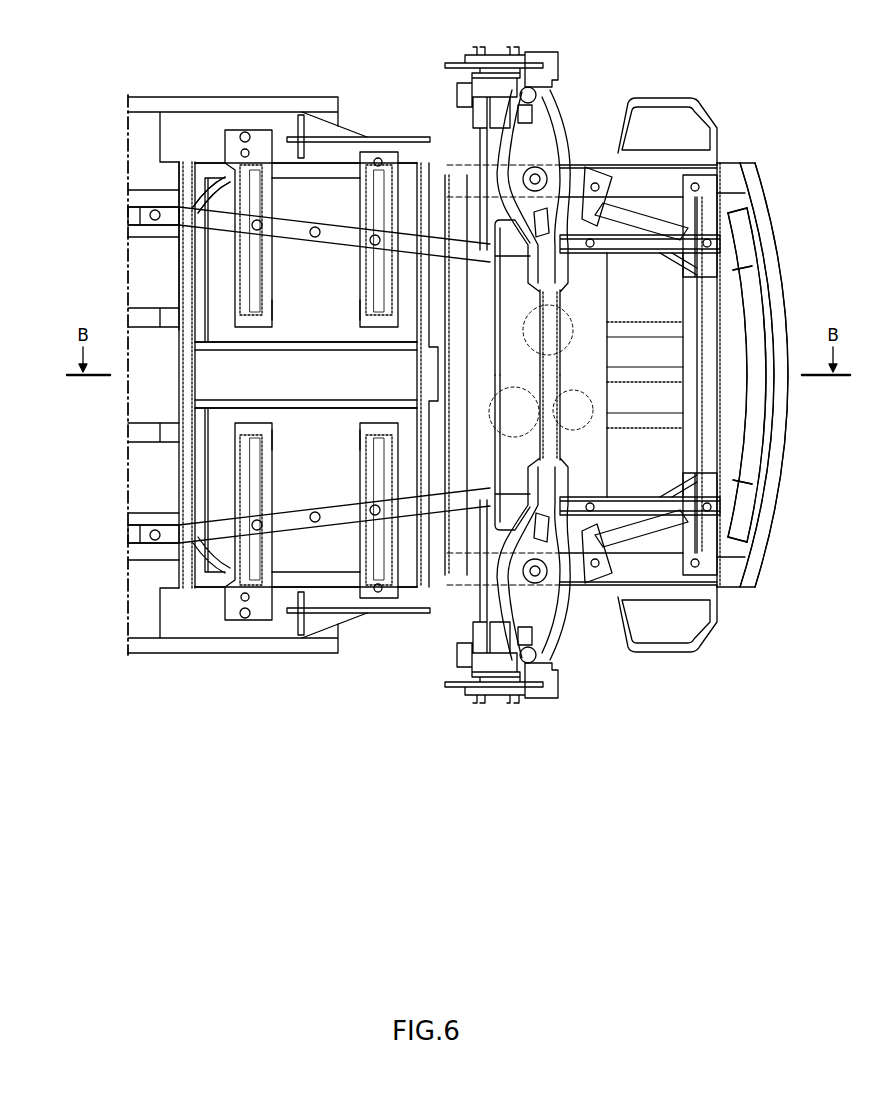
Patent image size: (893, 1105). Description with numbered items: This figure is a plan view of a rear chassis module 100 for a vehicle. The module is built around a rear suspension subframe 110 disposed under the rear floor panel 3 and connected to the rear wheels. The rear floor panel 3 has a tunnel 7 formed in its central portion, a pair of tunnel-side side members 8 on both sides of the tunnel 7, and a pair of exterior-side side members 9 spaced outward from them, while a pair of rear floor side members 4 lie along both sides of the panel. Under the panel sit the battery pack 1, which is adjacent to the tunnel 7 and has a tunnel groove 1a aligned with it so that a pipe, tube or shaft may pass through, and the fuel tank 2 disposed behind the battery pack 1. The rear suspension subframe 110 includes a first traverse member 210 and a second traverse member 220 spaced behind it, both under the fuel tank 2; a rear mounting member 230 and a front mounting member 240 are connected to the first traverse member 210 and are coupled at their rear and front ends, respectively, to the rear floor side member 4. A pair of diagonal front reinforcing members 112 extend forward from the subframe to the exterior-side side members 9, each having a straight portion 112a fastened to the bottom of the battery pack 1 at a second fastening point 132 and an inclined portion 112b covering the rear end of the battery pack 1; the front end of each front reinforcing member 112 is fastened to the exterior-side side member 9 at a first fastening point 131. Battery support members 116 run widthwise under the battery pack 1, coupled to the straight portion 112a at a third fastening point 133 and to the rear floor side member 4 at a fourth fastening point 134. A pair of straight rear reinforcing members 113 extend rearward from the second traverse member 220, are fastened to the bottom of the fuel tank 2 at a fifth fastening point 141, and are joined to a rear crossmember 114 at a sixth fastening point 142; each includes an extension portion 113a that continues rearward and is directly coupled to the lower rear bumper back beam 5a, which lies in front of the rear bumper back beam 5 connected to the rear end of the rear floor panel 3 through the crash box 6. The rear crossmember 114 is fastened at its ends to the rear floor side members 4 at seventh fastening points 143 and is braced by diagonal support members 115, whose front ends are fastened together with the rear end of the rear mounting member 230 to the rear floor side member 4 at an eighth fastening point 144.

The battery pack 1 is at (343, 553).
The tunnel groove 1a is at (286, 383).
The fuel tank 2 is at (593, 397).
The rear floor panel 3 is at (157, 578).
The rear floor side member 4 is at (325, 128).
The rear bumper back beam 5 is at (775, 450).
The lower rear bumper back beam 5a is at (757, 418).
The crash box 6 is at (728, 162).
The tunnel 7 is at (140, 392).
The tunnel-side side member 8 is at (128, 300).
The exterior-side side member 9 is at (128, 215).
The rear chassis module 100 is at (357, 706).
The rear suspension subframe 110 is at (430, 368).
The front reinforcing member 112 is at (185, 217).
The straight portion 112a is at (220, 220).
The inclined portion 112b is at (458, 250).
The rear reinforcing member 113 is at (635, 245).
The extension portion 113a is at (730, 256).
The rear crossmember 114 is at (707, 295).
The support member 115 is at (657, 223).
The battery support member 116 is at (366, 307).
The first fastening point 131 is at (153, 214).
The second fastening point 132 is at (315, 227).
The third fastening point 133 is at (378, 235).
The fourth fastening point 134 is at (245, 132).
The fifth fastening point 141 is at (553, 123).
The sixth fastening point 142 is at (712, 243).
The seventh fastening point 143 is at (696, 182).
The eighth fastening point 144 is at (595, 183).
The first traverse member 210 is at (455, 385).
The second traverse member 220 is at (553, 337).
The rear mounting member 230 is at (632, 178).
The front mounting member 240 is at (392, 138).